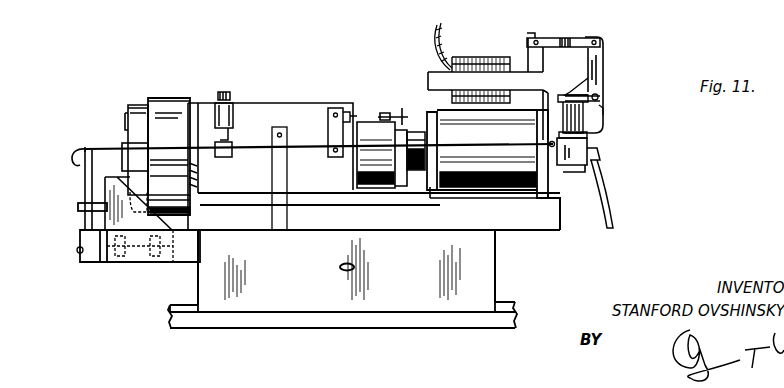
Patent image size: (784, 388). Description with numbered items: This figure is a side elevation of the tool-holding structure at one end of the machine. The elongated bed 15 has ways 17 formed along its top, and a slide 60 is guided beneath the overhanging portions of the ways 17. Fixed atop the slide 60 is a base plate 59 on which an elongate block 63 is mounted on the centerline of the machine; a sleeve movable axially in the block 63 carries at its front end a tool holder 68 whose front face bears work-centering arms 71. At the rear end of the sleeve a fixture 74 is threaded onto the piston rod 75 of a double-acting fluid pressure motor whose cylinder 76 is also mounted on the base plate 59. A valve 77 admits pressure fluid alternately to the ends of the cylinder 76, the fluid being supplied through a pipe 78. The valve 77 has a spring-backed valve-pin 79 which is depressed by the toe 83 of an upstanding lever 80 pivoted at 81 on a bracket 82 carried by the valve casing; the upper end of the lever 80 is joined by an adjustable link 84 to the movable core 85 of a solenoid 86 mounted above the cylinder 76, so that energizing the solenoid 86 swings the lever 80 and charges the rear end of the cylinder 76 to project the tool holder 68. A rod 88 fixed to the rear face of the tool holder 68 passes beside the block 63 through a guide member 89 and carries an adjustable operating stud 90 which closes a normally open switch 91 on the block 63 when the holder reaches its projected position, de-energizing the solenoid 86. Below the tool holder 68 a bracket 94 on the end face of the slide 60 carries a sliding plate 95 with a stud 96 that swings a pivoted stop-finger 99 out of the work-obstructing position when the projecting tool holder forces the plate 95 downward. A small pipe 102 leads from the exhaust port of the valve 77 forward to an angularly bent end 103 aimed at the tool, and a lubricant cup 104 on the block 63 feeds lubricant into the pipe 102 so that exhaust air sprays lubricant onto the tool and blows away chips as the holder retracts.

The bed 15 is at (183, 333).
The ways 17 is at (192, 308).
The base plate 59 is at (507, 218).
The slide 60 is at (494, 282).
The block 63 is at (292, 102).
The tool holder 68 is at (172, 100).
The work-centering arms 71 is at (134, 106).
The fixture 74 is at (368, 128).
The piston rod 75 is at (422, 132).
The cylinder 76 is at (530, 187).
The valve 77 is at (588, 120).
The pipe 78 is at (602, 196).
The valve-pin 79 is at (567, 95).
The lever 80 is at (603, 54).
The pivot 81 is at (600, 97).
The bracket 82 is at (603, 110).
The toe 83 is at (573, 92).
The adjustable link 84 is at (570, 24).
The core 85 is at (530, 60).
The solenoid 86 is at (488, 40).
The rod 88 is at (236, 196).
The guide member 89 is at (287, 200).
The operating stud 90 is at (390, 113).
The switch 91 is at (333, 107).
The bracket 94 is at (80, 260).
The plate 95 is at (137, 223).
The stud 96 is at (82, 205).
The stop-finger 99 is at (85, 173).
The pipe 102 is at (450, 148).
The angularly bent front end portion 103 is at (72, 154).
The lubricant cup 104 is at (227, 107).